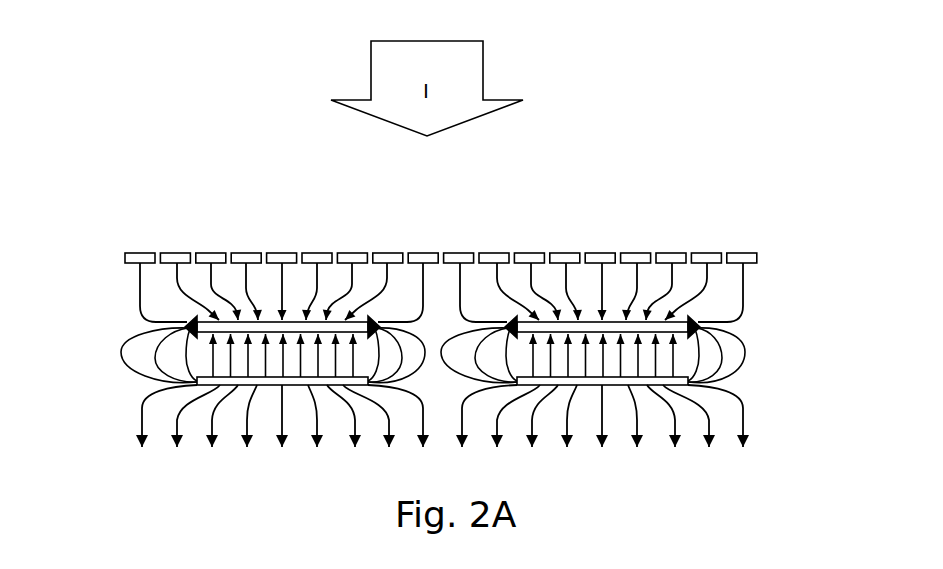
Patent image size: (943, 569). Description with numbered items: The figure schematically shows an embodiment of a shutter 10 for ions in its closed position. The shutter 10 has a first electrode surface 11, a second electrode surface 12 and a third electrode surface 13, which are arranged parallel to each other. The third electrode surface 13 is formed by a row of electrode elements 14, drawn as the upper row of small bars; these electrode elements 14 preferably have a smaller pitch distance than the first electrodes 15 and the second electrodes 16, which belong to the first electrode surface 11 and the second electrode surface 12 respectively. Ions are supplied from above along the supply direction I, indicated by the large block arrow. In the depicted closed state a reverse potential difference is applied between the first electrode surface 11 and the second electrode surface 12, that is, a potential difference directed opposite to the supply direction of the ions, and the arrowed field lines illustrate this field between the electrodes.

The shutter 10 is at (718, 99).
The first electrode surface 11 is at (456, 331).
The second electrode surface 12 is at (780, 421).
The third electrode surface 13 is at (494, 227).
The electrode elements 14 is at (140, 258).
The first electrodes 15 is at (211, 328).
The second electrodes 16 is at (273, 385).